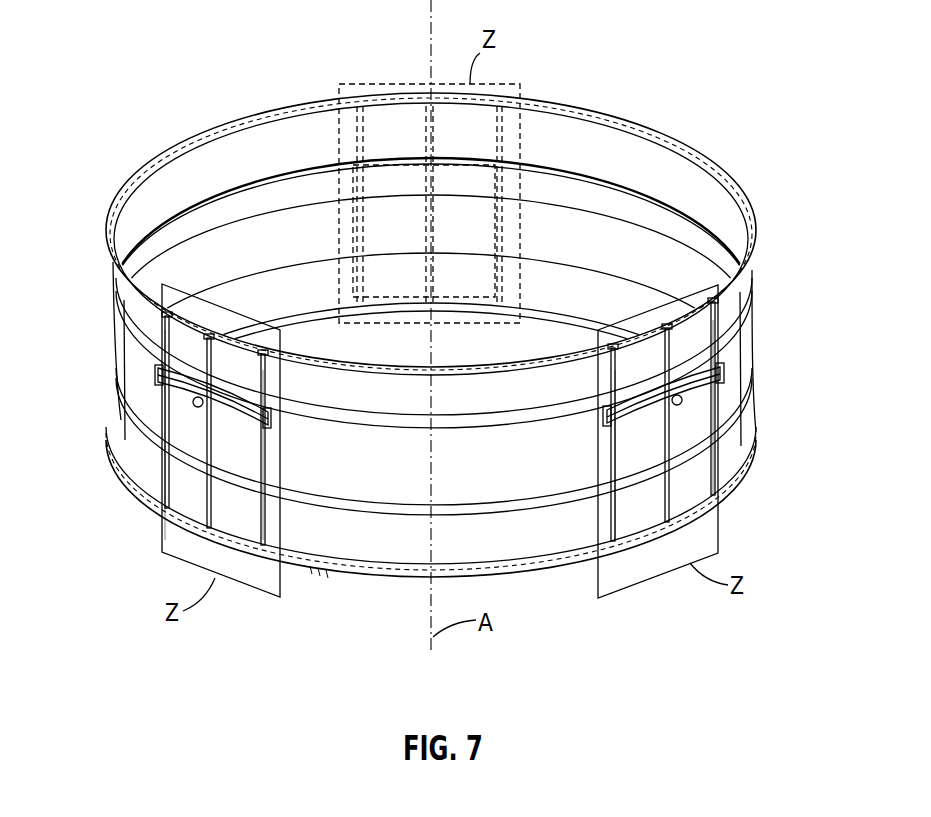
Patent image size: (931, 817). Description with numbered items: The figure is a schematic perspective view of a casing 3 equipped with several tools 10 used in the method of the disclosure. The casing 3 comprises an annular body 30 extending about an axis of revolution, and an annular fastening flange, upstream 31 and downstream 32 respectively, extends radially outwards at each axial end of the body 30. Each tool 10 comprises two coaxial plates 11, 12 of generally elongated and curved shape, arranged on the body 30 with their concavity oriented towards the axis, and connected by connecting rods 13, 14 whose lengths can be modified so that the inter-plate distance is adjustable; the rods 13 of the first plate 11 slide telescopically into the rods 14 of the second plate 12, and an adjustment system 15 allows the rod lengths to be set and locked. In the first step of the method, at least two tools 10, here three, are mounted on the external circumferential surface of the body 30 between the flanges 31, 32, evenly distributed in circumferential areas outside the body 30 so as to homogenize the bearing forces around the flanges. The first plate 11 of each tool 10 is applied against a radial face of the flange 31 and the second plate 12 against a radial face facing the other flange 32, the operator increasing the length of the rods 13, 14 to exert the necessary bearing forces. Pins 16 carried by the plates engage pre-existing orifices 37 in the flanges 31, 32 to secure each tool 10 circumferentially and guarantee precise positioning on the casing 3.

The casing 3 is at (778, 281).
The tool 10 is at (516, 131).
The first plate 11 is at (155, 313).
The second plate 12 is at (175, 526).
The connecting rods of the first plate 13 is at (160, 338).
The connecting rods of the second plate 14 is at (152, 482).
The adjustment system 15 is at (120, 394).
The pins 16 is at (122, 290).
The annular body 30 is at (732, 378).
The upstream fastening flange 31 is at (762, 212).
The downstream fastening flange 32 is at (757, 458).
The orifices 37 is at (184, 146).